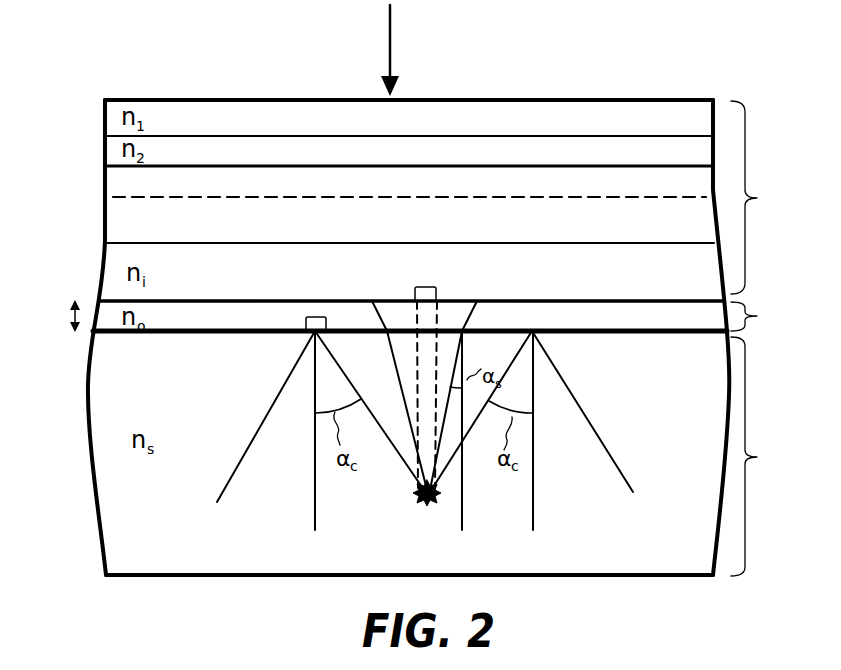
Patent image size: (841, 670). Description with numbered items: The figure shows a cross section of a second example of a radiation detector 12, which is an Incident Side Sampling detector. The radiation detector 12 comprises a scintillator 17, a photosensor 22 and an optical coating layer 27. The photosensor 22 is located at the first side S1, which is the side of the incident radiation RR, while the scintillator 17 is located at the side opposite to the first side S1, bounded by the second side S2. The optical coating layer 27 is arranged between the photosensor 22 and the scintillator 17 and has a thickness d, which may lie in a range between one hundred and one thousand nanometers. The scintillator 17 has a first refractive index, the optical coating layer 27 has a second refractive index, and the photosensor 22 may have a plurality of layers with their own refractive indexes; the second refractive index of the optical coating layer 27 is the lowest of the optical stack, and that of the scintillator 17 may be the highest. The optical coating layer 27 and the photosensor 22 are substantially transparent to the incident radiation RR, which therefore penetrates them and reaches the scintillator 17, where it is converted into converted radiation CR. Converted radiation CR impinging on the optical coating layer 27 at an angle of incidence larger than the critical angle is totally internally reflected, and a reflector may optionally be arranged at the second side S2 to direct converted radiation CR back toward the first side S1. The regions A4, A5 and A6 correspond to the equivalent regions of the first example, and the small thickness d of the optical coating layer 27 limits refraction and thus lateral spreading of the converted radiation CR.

The radiation detector 12 is at (114, 78).
The photosensor 22 is at (757, 198).
The optical coating layer 27 is at (757, 316).
The scintillator 17 is at (757, 457).
The first side S1 is at (668, 86).
The second side S2 is at (680, 590).
The incident radiation RR is at (392, 35).
The region A4 is at (440, 497).
The region A5 is at (428, 286).
The region A6 is at (315, 317).
The converted radiation CR is at (400, 470).
The thickness d is at (68, 334).